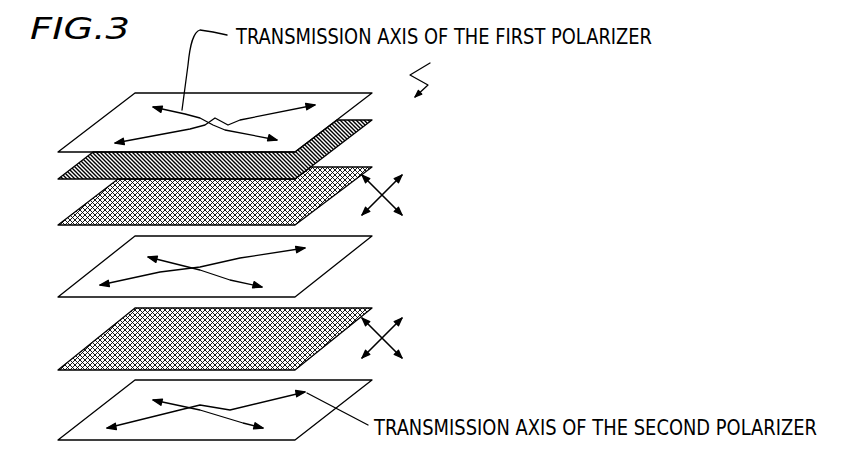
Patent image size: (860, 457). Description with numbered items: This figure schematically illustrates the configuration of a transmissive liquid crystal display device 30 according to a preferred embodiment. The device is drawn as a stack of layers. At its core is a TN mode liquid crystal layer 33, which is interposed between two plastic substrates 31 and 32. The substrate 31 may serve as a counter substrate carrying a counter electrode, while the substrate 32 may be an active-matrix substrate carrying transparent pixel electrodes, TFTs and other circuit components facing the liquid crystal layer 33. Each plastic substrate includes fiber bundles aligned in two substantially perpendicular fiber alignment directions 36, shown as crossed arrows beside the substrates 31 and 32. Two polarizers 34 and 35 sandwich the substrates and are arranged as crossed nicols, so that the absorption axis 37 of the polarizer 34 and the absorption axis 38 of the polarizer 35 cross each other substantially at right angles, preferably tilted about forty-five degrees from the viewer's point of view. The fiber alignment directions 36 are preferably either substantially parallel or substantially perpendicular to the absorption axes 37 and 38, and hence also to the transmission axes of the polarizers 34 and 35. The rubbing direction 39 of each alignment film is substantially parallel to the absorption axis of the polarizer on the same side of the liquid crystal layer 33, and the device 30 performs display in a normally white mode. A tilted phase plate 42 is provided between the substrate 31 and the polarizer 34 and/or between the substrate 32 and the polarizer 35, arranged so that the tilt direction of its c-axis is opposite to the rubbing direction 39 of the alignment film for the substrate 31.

The transmissive liquid crystal display device 30 is at (432, 74).
The substrate 31 is at (85, 204).
The substrate 32 is at (90, 345).
The liquid crystal layer 33 is at (85, 277).
The polarizer 34 is at (100, 120).
The polarizer 35 is at (90, 415).
The fiber alignment directions 36 is at (399, 266).
The absorption axis 37 is at (275, 112).
The absorption axis 38 is at (243, 423).
The rubbing direction 39 is at (285, 262).
The tilted phase plate 42 is at (70, 170).